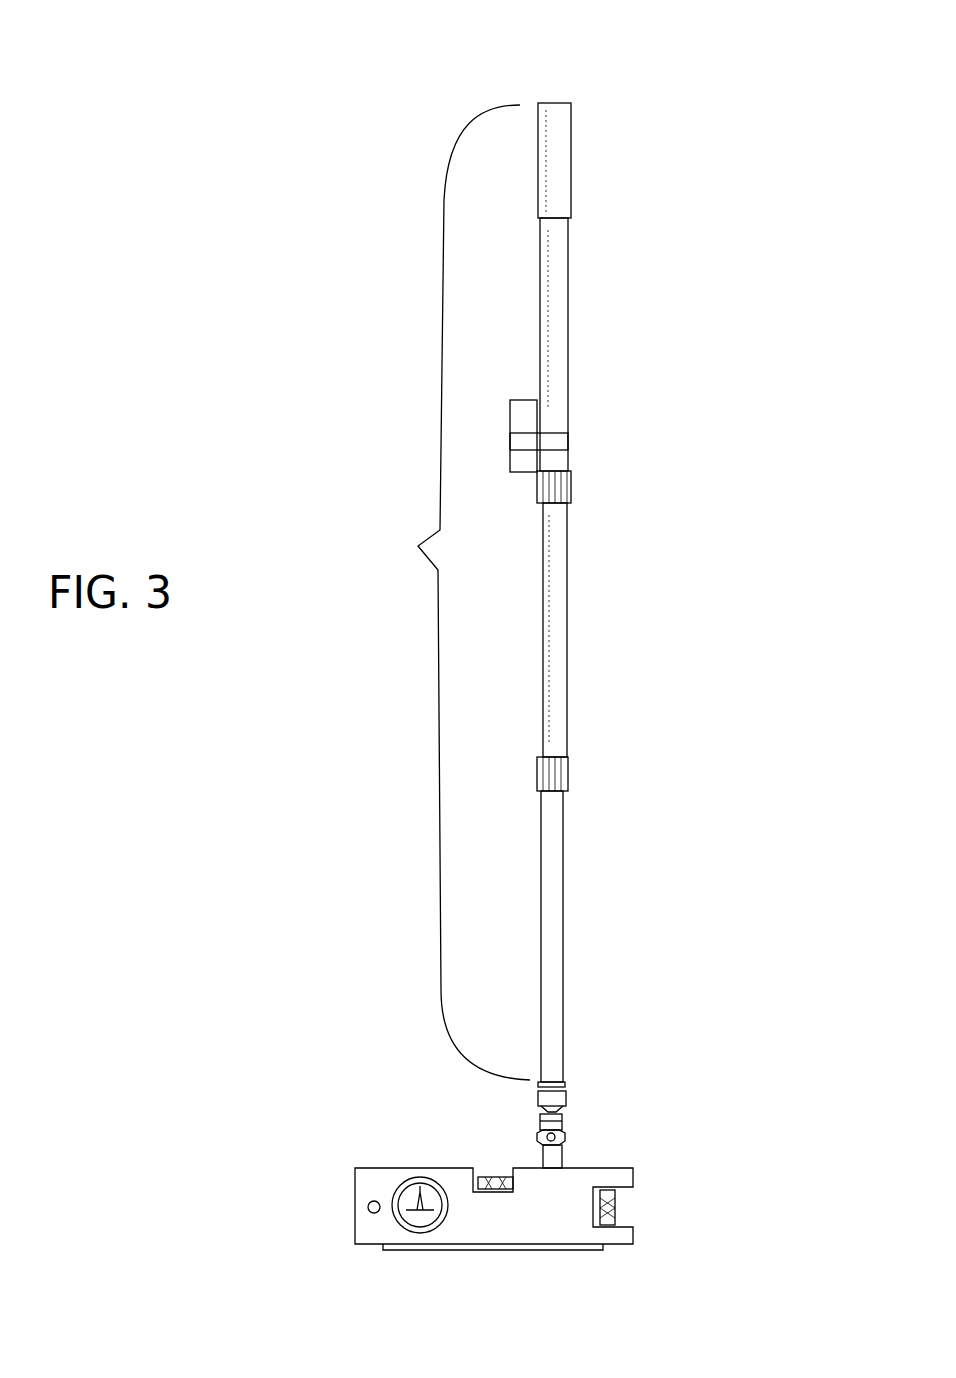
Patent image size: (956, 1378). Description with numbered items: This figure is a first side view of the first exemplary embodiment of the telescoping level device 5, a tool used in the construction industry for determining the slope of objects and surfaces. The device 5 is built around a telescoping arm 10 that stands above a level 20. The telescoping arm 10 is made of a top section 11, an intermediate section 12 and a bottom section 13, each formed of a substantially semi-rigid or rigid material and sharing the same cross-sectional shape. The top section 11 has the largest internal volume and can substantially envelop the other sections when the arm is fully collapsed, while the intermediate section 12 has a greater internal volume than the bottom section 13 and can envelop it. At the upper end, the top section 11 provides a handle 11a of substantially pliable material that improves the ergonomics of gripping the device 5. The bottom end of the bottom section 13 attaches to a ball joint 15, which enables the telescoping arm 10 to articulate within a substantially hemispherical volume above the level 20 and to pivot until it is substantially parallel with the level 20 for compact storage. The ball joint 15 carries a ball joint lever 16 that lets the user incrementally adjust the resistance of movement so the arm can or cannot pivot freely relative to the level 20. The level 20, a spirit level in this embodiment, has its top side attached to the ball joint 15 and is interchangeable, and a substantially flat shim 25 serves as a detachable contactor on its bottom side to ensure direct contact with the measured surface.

The telescoping level device 5 is at (416, 32).
The telescoping arm 10 is at (443, 592).
The handle 11a is at (565, 155).
The top section 11 is at (565, 327).
The intermediate section 12 is at (552, 633).
The bottom section 13 is at (552, 969).
The ball joint 15 is at (537, 1120).
The ball joint lever 16 is at (565, 1137).
The level 20 is at (622, 1177).
The shim 25 is at (470, 1250).